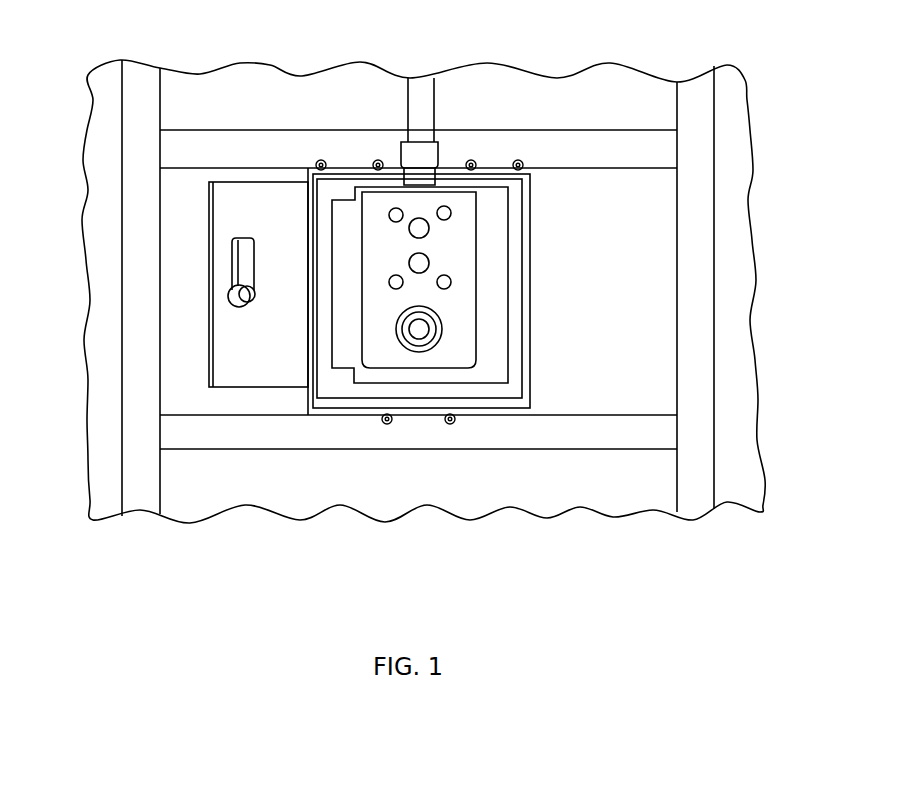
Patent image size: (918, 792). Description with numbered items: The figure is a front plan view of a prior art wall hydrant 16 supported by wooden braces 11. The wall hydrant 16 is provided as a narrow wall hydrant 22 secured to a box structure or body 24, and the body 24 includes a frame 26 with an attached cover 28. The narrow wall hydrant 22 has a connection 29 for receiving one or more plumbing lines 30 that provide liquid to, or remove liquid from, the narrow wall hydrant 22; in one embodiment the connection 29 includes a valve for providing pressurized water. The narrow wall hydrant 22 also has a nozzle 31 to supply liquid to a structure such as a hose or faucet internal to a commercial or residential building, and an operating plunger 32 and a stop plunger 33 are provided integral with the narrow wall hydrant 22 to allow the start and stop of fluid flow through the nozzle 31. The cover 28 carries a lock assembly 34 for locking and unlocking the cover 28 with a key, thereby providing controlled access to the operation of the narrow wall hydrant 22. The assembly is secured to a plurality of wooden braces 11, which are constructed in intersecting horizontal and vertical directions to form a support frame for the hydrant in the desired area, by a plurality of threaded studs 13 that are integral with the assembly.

The wooden braces 11 is at (147, 148).
The threaded studs 13 is at (378, 160).
The wall hydrant 16 is at (487, 283).
The narrow wall hydrant 22 is at (459, 322).
The box structure or body 24 is at (533, 214).
The frame 26 is at (521, 352).
The cover 28 is at (275, 370).
The connection 29 is at (400, 153).
The plumbing lines 30 is at (434, 113).
The nozzle 31 is at (432, 345).
The operating plunger 32 is at (409, 263).
The stop plunger 33 is at (409, 228).
The lock assembly 34 is at (241, 238).